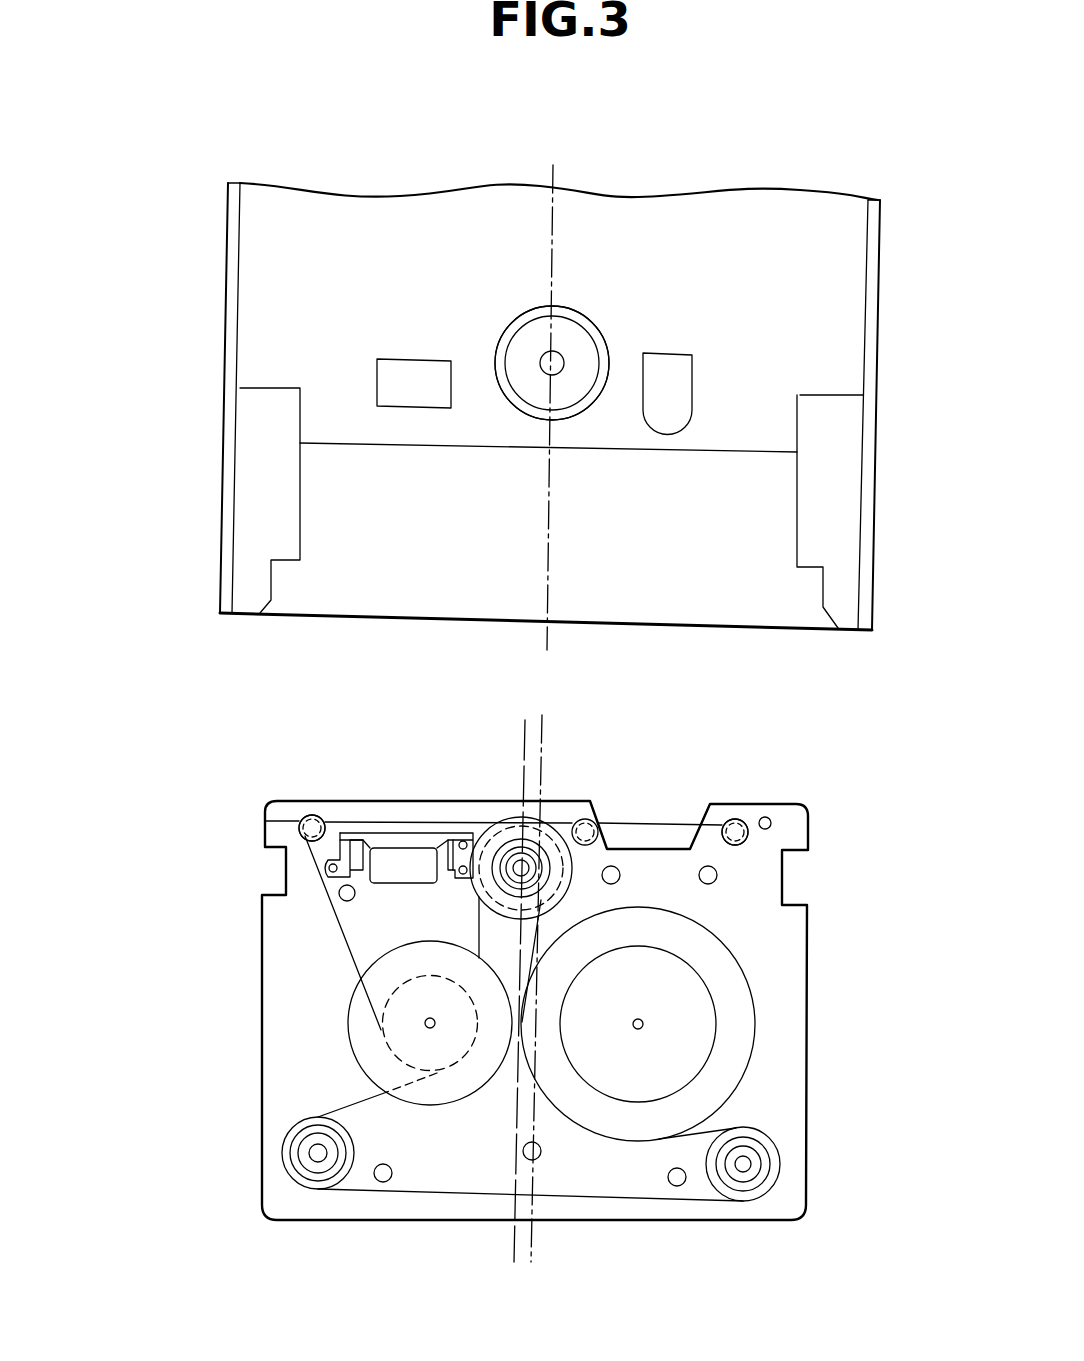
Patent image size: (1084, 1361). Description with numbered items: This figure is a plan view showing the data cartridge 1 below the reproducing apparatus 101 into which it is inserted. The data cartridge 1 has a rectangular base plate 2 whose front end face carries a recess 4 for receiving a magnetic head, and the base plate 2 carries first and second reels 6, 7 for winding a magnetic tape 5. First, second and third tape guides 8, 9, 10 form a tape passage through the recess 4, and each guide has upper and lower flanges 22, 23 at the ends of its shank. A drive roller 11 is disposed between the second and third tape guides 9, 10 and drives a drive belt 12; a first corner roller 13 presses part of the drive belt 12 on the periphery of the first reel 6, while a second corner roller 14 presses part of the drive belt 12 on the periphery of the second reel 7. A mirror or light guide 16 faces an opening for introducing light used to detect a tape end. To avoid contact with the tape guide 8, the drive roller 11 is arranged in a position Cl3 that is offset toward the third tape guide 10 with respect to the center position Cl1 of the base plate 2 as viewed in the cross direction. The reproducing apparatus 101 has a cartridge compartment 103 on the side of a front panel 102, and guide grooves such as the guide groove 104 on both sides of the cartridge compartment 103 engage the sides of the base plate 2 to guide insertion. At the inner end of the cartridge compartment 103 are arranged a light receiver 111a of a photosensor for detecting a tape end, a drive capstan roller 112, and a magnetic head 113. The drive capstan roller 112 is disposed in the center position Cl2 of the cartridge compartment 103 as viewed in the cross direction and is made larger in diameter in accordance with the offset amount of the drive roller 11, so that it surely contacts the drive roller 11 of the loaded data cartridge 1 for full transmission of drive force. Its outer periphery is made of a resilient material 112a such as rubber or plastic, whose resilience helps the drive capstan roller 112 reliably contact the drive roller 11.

The data cartridge 1 is at (468, 1010).
The base plate 2 is at (258, 940).
The recess 4 is at (648, 847).
The magnetic tape 5 is at (694, 827).
The first reel 6 is at (700, 1046).
The second reel 7 is at (358, 1025).
The first tape guide 8 is at (746, 815).
The second tape guide 9 is at (594, 823).
The third tape guide 10 is at (307, 814).
The drive roller 11 is at (503, 836).
The drive belt 12 is at (432, 1196).
The first corner roller 13 is at (773, 1176).
The second corner roller 14 is at (285, 1166).
The mirror or light guide 16 is at (399, 831).
The upper flange 22 is at (302, 822).
The lower flange 23 is at (523, 830).
The reproducing apparatus 101 is at (226, 332).
The front panel 102 is at (250, 605).
The cartridge compartment 103 is at (342, 603).
The guide groove 104 is at (272, 500).
The light receiver 111a is at (415, 360).
The drive capstan roller 112 is at (571, 308).
The resilient material 112a is at (593, 323).
The magnetic head 113 is at (675, 365).
The center position of the base plate Cl1 is at (550, 728).
The center position of the cartridge compartment Cl2 is at (545, 555).
The offset position of the drive roller Cl3 is at (524, 728).